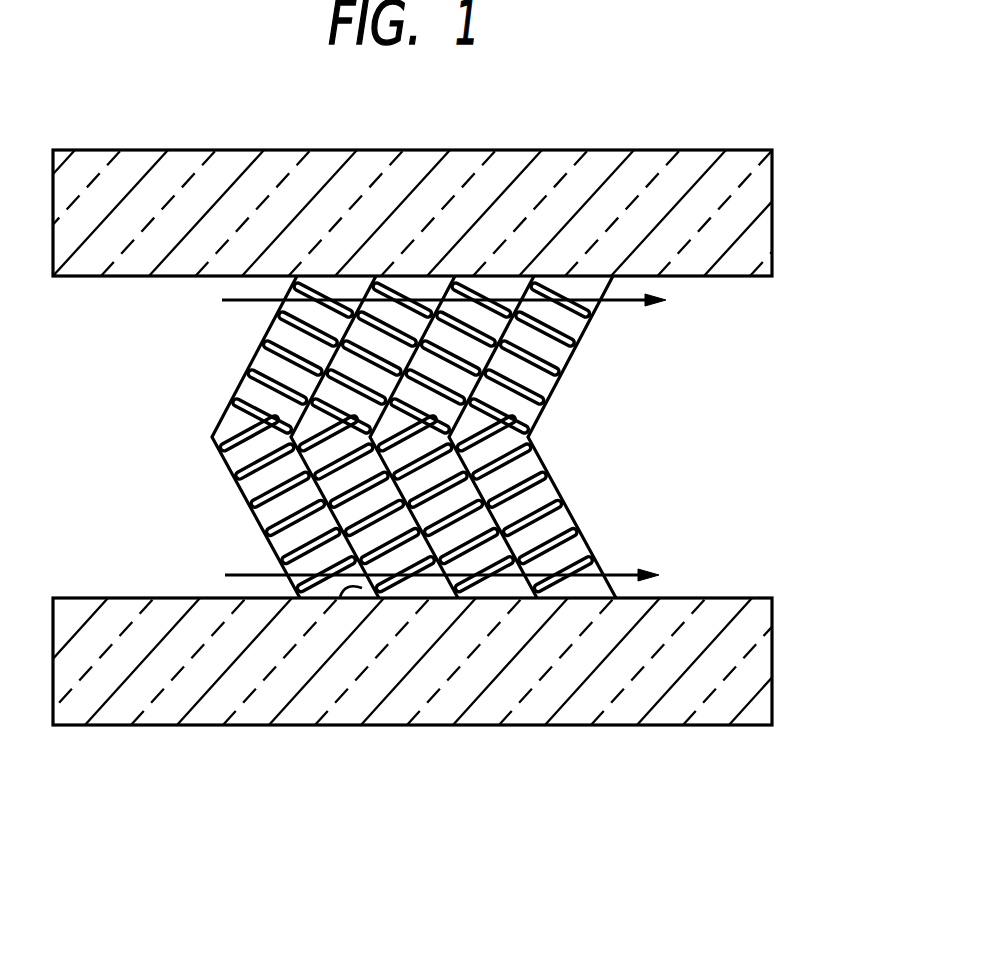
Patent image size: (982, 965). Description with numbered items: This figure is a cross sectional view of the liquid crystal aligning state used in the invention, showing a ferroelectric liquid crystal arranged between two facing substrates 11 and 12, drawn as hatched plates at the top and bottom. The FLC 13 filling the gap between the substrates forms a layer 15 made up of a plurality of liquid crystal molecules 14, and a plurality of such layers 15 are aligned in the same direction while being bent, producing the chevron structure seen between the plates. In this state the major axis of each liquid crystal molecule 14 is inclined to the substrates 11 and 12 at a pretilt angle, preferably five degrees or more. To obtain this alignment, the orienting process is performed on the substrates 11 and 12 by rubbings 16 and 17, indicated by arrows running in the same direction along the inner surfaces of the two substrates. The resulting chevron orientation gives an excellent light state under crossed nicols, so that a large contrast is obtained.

The substrate 11 is at (772, 168).
The substrate 12 is at (772, 612).
The FLC 13 is at (498, 437).
The liquid crystal molecule 14 is at (260, 458).
The layer 15 is at (236, 382).
The rubbing 16 is at (655, 305).
The rubbing 17 is at (645, 563).